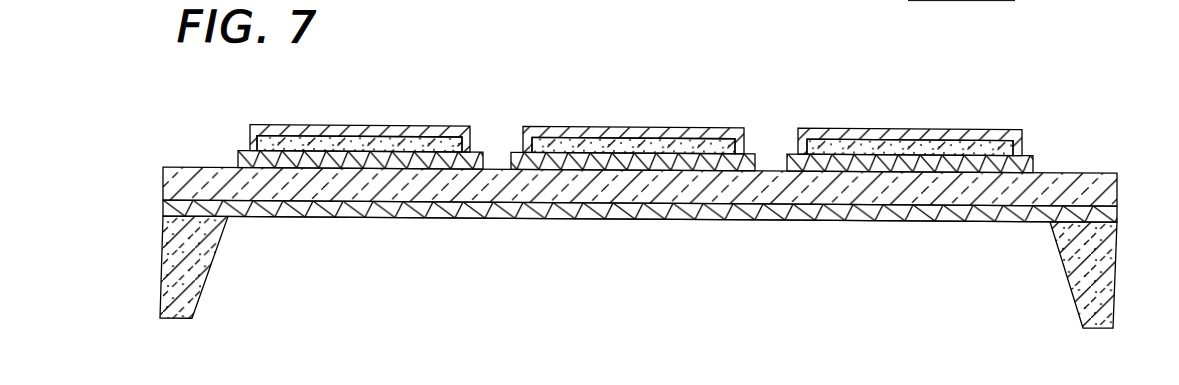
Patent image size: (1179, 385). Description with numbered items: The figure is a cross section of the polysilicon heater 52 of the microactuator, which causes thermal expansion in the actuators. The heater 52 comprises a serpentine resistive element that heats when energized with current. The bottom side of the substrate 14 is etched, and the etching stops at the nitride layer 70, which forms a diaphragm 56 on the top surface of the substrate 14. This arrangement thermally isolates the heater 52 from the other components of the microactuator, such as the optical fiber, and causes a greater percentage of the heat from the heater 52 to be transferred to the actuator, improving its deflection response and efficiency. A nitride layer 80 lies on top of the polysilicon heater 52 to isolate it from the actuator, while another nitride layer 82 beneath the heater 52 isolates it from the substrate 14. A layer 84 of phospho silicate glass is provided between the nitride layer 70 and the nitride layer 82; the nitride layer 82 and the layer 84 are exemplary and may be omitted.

The substrate 14 is at (212, 266).
The polysilicon heater 52 is at (427, 142).
The diaphragm 56 is at (488, 215).
The nitride layer 70 is at (163, 207).
The nitride layer 80 is at (327, 85).
The nitride layer 82 is at (238, 160).
The layer of phospho silicate glass 84 is at (163, 172).